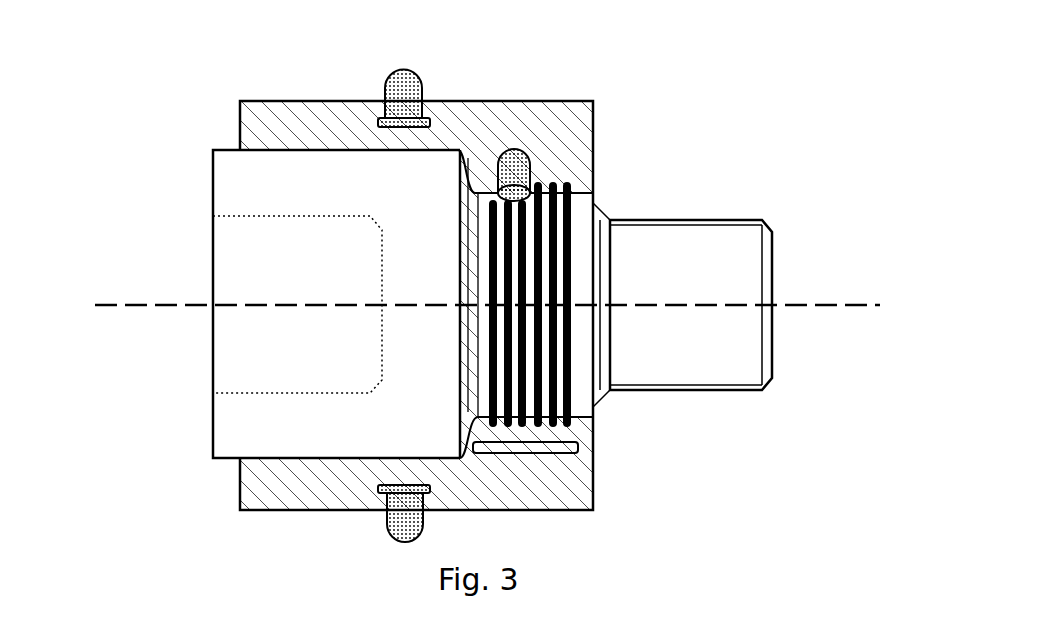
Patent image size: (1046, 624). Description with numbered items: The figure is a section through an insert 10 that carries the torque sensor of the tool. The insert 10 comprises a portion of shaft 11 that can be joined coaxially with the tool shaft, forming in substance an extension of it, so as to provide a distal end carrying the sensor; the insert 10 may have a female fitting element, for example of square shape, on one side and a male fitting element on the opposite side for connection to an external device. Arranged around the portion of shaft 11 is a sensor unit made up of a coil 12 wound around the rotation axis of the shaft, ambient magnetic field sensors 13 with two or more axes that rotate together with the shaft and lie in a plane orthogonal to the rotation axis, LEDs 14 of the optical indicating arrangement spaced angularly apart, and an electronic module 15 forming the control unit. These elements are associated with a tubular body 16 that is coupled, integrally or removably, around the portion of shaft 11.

The insert 10 is at (128, 82).
The portion of shaft 11 is at (229, 427).
The coil 12 is at (598, 258).
The ambient magnetic field sensors 13 is at (515, 152).
The LEDs 14 is at (400, 87).
The electronic module 15 is at (567, 452).
The tubular body 16 is at (258, 488).